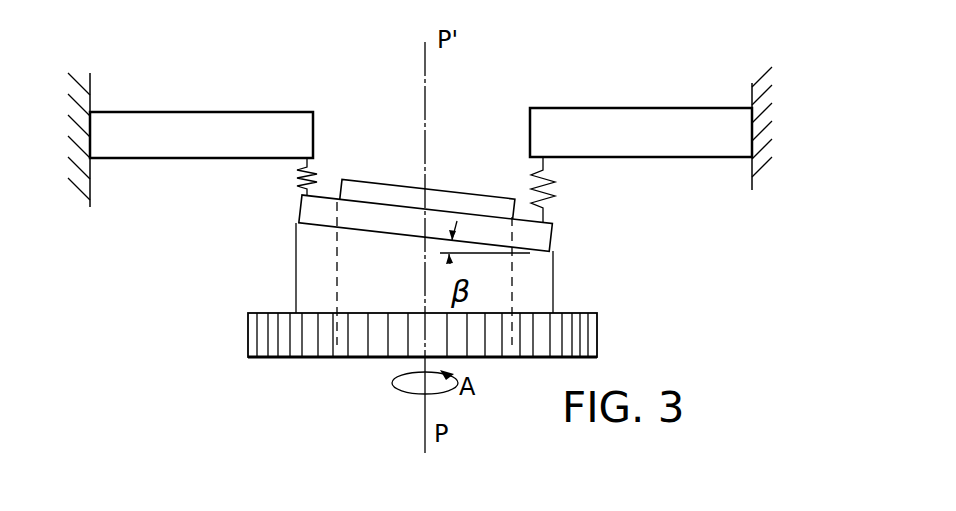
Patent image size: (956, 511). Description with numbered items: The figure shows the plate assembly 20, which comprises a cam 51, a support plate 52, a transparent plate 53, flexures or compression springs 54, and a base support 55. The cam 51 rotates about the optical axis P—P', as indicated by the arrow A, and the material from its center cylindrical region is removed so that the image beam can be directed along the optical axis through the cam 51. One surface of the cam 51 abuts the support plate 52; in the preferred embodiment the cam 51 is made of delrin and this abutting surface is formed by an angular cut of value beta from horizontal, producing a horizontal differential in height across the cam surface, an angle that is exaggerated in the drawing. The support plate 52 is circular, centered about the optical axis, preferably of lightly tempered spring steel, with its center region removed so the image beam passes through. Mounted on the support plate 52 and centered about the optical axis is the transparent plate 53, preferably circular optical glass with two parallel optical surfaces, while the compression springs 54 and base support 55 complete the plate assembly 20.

The plate assembly 20 is at (724, 226).
The cam 51 is at (296, 272).
The support plate 52 is at (553, 228).
The transparent plate 53 is at (459, 188).
The compression springs 54 is at (297, 183).
The base support 55 is at (649, 108).